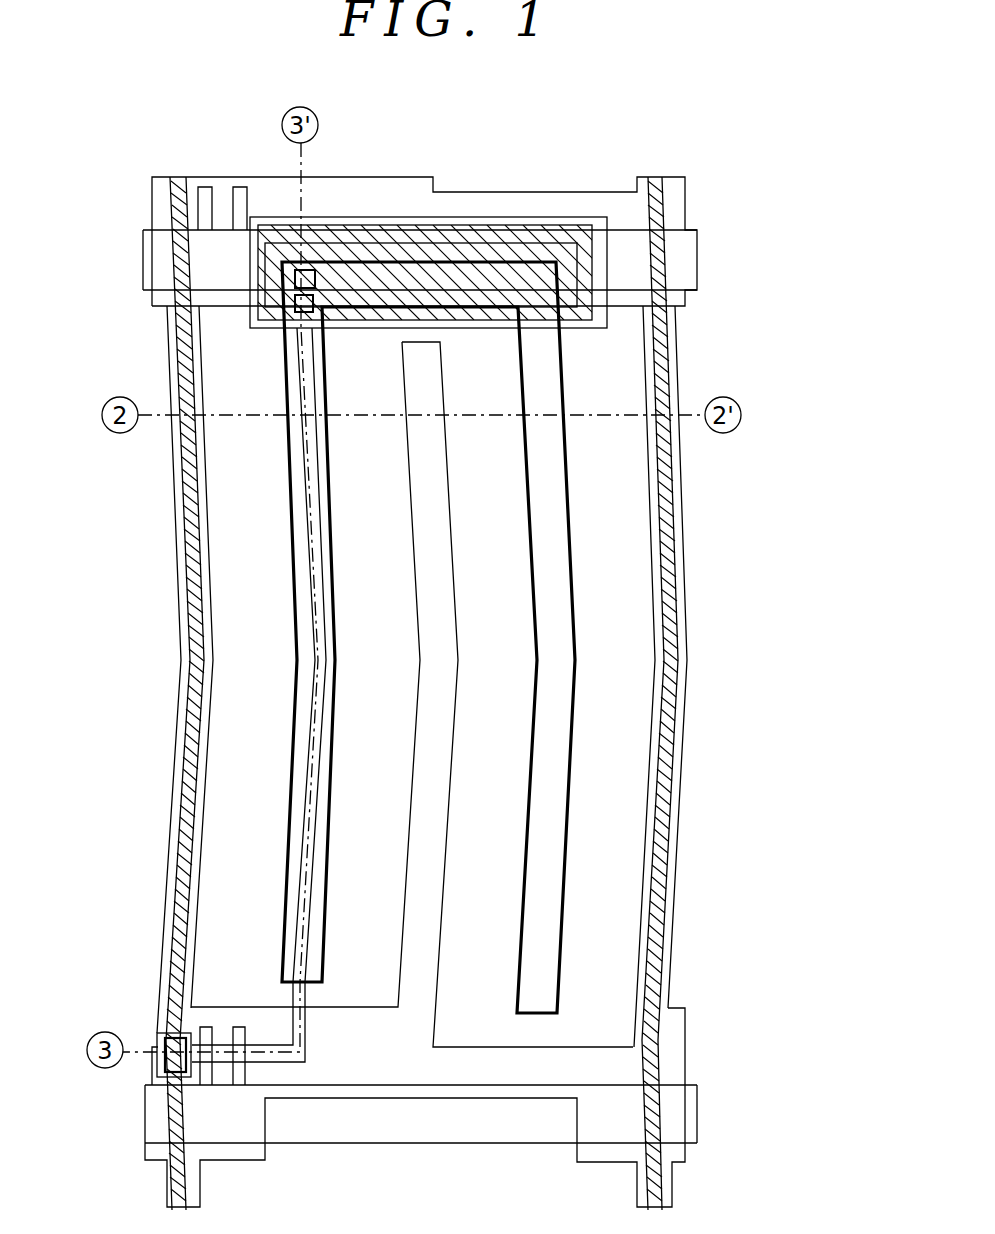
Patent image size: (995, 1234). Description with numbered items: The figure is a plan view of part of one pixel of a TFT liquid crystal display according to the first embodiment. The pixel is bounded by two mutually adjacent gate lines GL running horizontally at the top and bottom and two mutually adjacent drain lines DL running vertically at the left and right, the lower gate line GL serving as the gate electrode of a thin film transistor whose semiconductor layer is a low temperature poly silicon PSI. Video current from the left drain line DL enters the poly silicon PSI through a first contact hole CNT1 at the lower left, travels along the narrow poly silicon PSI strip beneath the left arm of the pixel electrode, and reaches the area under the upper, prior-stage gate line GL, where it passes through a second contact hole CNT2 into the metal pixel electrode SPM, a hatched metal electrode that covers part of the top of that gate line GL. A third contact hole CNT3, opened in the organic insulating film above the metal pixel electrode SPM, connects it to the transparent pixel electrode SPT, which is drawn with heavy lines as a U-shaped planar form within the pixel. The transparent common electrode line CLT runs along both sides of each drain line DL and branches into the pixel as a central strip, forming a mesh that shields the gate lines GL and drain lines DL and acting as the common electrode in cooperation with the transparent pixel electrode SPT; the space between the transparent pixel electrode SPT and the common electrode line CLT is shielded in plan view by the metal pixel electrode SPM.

The gate line GL is at (697, 262).
The drain line DL is at (190, 590).
The transparent common electrode line CLT is at (418, 523).
The poly silicon PSI is at (606, 222).
The metal pixel electrode SPM is at (528, 243).
The transparent pixel electrode SPT is at (532, 510).
The first contact hole CNT1 is at (170, 1020).
The second contact hole CNT2 is at (297, 303).
The third contact hole CNT3 is at (312, 279).